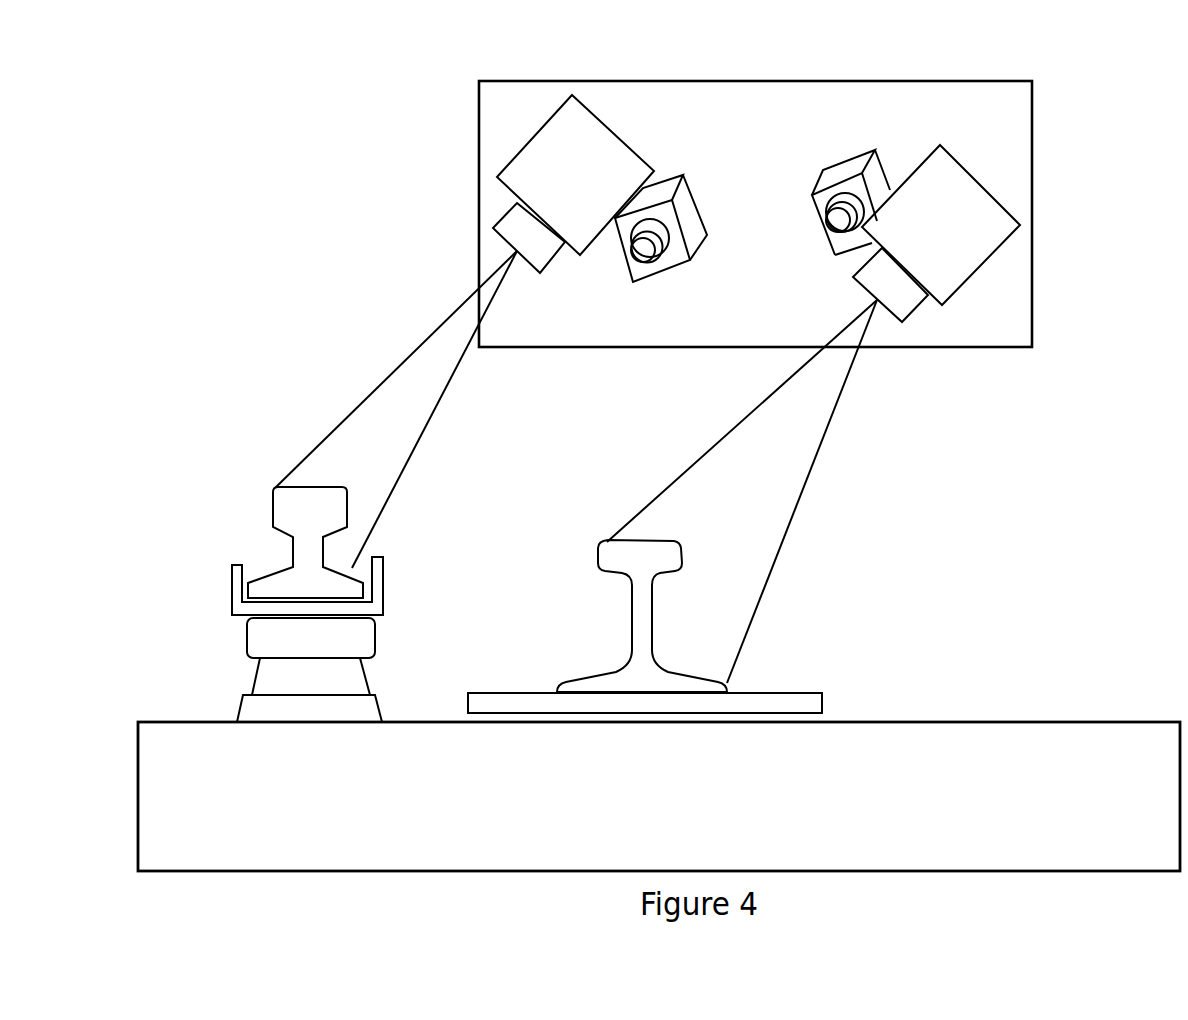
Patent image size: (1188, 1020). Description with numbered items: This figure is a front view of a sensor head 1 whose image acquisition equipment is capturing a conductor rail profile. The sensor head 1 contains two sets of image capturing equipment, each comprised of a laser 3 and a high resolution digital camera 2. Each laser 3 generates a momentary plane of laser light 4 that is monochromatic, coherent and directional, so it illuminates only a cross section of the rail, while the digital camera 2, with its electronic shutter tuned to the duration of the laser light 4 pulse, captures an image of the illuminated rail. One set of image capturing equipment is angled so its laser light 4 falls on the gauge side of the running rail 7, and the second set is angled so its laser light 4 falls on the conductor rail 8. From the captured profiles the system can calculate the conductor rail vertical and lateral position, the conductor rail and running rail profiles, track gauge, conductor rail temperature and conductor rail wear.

The sensor head 1 is at (710, 105).
The digital camera 2 is at (680, 208).
The laser 3 is at (545, 173).
The plane of laser light 4 is at (410, 357).
The running rail 7 is at (612, 560).
The conductor rail 8 is at (290, 505).